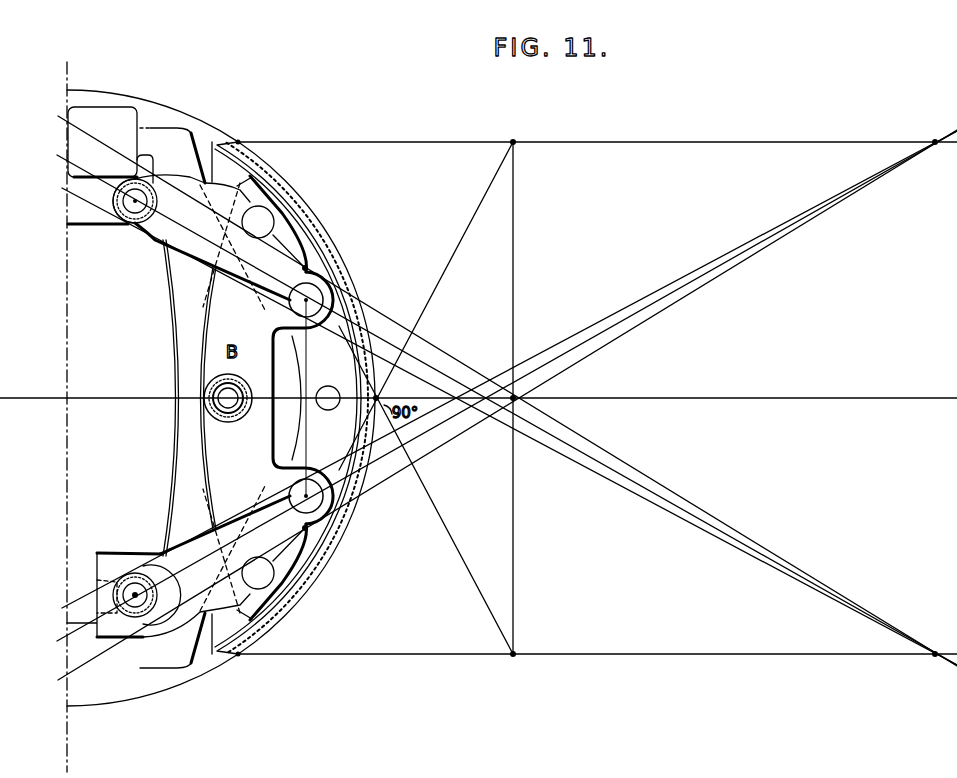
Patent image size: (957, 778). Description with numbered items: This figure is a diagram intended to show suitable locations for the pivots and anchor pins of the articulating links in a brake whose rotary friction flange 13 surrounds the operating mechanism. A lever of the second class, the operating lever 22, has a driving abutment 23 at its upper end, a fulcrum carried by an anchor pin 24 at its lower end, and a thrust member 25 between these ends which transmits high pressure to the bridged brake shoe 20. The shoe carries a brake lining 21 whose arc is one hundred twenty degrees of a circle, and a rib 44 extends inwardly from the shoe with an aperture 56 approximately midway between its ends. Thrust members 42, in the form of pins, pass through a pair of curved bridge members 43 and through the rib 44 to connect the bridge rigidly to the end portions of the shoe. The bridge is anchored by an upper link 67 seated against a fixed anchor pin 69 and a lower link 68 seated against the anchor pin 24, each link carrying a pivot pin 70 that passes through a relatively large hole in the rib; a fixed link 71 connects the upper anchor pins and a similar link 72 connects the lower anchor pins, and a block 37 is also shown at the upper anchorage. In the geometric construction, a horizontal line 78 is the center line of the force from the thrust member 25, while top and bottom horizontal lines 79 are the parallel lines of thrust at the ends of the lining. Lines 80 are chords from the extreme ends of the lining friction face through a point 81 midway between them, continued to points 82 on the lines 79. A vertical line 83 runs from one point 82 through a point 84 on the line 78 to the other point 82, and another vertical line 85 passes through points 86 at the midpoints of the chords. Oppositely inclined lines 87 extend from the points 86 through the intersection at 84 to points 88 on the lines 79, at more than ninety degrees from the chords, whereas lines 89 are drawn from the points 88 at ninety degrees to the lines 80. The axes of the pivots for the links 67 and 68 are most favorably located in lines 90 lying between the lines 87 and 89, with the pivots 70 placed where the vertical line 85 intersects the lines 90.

The rotary friction flange 13 is at (150, 690).
The brake shoe 20 is at (213, 140).
The brake lining 21 is at (288, 181).
The operating lever 22 is at (172, 303).
The driving abutment 23 is at (147, 159).
The anchor pin 24 is at (136, 616).
The thrust member 25 is at (208, 407).
The anchor block 37 is at (102, 142).
The thrust member 42 is at (258, 397).
The bridge member 43 is at (277, 398).
The rib 44 is at (212, 636).
The aperture 56 is at (318, 402).
The upper link 67 is at (284, 241).
The lower link 68 is at (285, 550).
The anchor pin 69 is at (128, 210).
The pivot pin 70 is at (292, 302).
The fixed link 71 is at (78, 211).
The link 72 is at (78, 573).
The horizontal line 78 is at (55, 400).
The horizontal lines 79 is at (445, 141).
The lines 80 is at (348, 350).
The point 81 is at (380, 396).
The points 82 is at (516, 141).
The vertical line 83 is at (516, 264).
The point 84 is at (520, 396).
The vertical line 85 is at (308, 377).
The points 86 is at (310, 268).
The inclined lines 87 is at (774, 244).
The points 88 is at (934, 140).
The lines 89 is at (60, 188).
The lines 90 is at (57, 156).